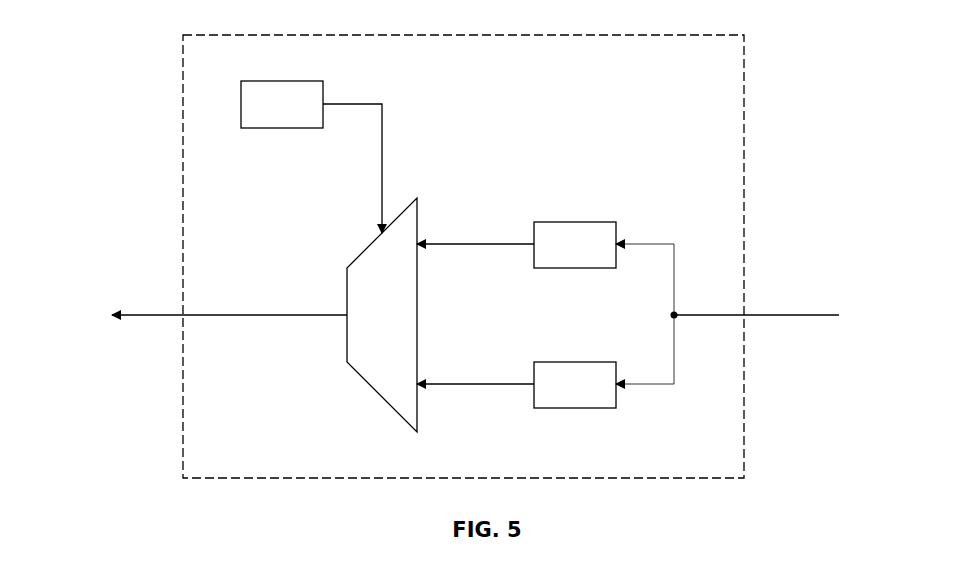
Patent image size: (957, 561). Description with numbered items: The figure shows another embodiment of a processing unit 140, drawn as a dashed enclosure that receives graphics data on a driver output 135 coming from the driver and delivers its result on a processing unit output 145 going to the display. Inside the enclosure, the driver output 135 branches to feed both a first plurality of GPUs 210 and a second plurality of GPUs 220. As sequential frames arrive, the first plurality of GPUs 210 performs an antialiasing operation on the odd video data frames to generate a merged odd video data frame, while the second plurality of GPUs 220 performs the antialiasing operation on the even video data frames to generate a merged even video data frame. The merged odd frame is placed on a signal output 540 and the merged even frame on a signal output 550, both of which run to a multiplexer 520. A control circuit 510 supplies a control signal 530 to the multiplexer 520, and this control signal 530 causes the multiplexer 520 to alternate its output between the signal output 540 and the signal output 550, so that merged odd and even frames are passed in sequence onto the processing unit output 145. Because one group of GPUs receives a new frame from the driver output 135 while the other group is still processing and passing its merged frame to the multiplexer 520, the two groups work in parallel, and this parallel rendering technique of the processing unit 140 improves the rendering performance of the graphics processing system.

The processing unit 140 is at (745, 57).
The control circuit 510 is at (282, 104).
The control signal 530 is at (347, 103).
The multiplexer 520 is at (382, 315).
The processing unit output 145 is at (135, 313).
The first plurality of GPUs 210 is at (575, 245).
The second plurality of GPUs 220 is at (575, 385).
The signal output 540 is at (463, 244).
The signal output 550 is at (463, 384).
The driver output 135 is at (768, 313).